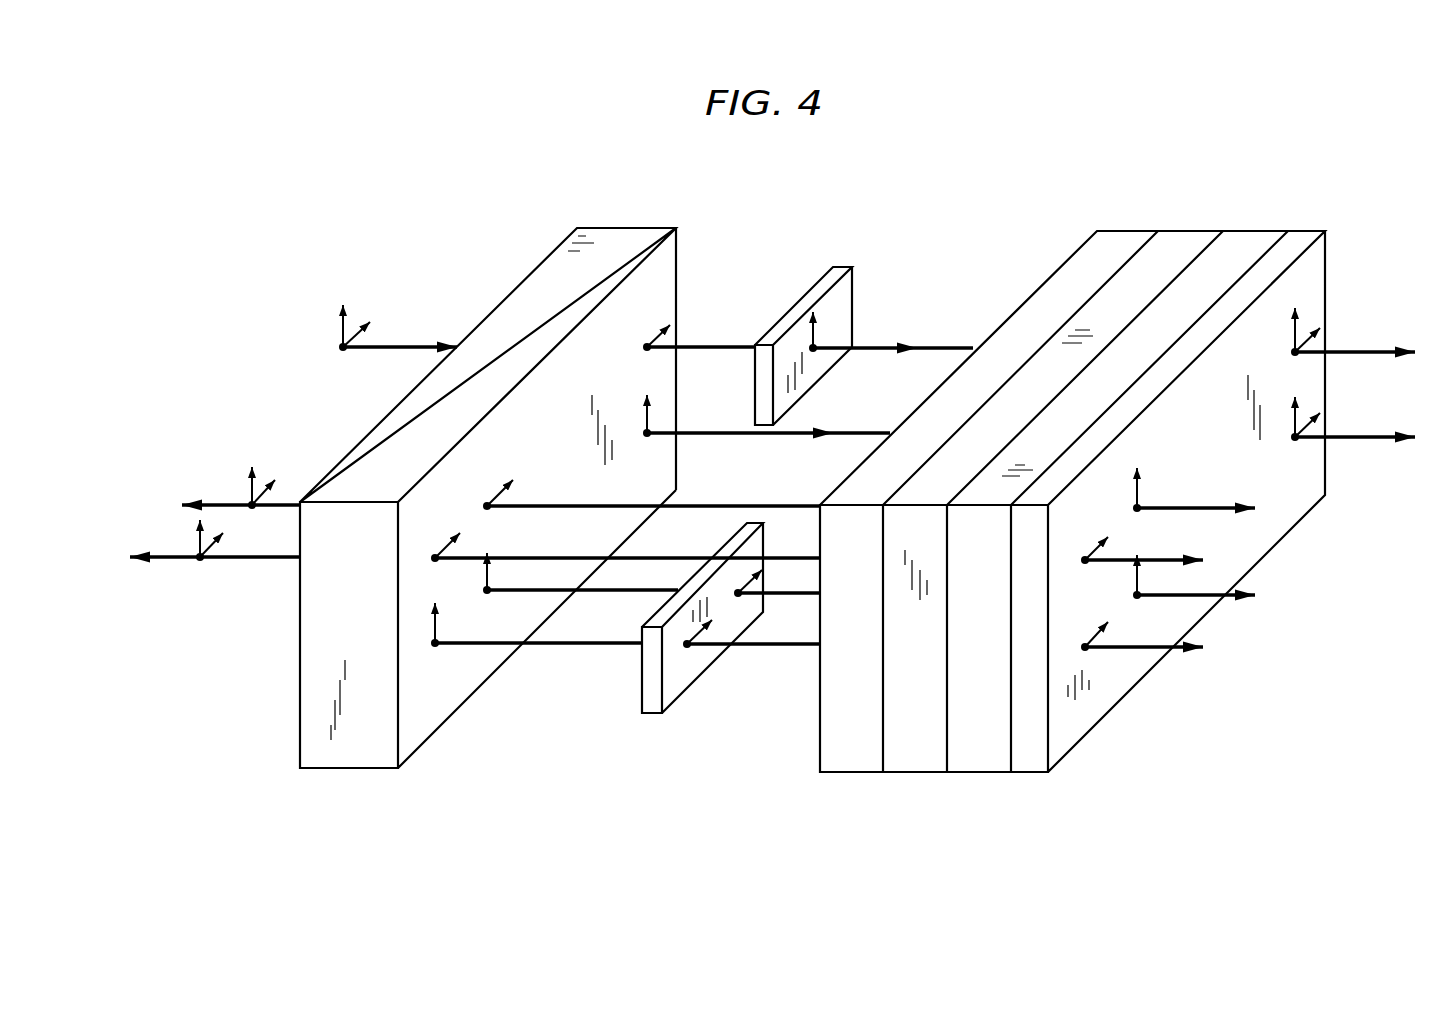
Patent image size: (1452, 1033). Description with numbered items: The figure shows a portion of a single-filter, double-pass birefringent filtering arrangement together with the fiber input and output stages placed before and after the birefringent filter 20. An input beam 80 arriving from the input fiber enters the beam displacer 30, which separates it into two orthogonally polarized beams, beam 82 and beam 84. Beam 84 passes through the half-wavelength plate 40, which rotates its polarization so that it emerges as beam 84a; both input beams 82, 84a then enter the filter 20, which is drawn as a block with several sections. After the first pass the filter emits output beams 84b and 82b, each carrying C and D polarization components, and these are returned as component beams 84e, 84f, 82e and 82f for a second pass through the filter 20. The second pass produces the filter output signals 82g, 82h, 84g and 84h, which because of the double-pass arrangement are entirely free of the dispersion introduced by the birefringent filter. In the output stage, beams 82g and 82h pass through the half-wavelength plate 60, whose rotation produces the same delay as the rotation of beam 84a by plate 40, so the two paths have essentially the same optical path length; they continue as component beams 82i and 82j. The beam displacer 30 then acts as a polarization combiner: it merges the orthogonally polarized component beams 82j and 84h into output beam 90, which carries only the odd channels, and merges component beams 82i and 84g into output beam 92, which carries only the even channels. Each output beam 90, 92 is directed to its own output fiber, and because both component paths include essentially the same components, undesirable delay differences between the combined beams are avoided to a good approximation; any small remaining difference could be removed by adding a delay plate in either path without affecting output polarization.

The birefringent filter 20 is at (973, 773).
The beam displacer / polarization combiner 30 is at (627, 228).
The half-wavelength plate 40 is at (838, 268).
The half-wavelength plate 60 is at (652, 705).
The input beam 80 is at (395, 345).
The input beam 82 is at (847, 432).
The input beam 84 is at (712, 347).
The input beam 84a is at (873, 347).
The output beam 84b is at (1377, 350).
The output beam 82b is at (1373, 435).
The return beam 84e is at (1163, 560).
The return beam 84f is at (1207, 508).
The return beam 82e is at (1157, 647).
The return beam 82f is at (1207, 595).
The filter output signal 84g is at (562, 558).
The filter output signal 84h is at (733, 506).
The filter output signal 82g is at (703, 647).
The filter output signal 82h is at (787, 595).
The component beam 82i is at (450, 645).
The component beam 82j is at (502, 593).
The output beam 90 is at (220, 505).
The output beam 92 is at (183, 562).